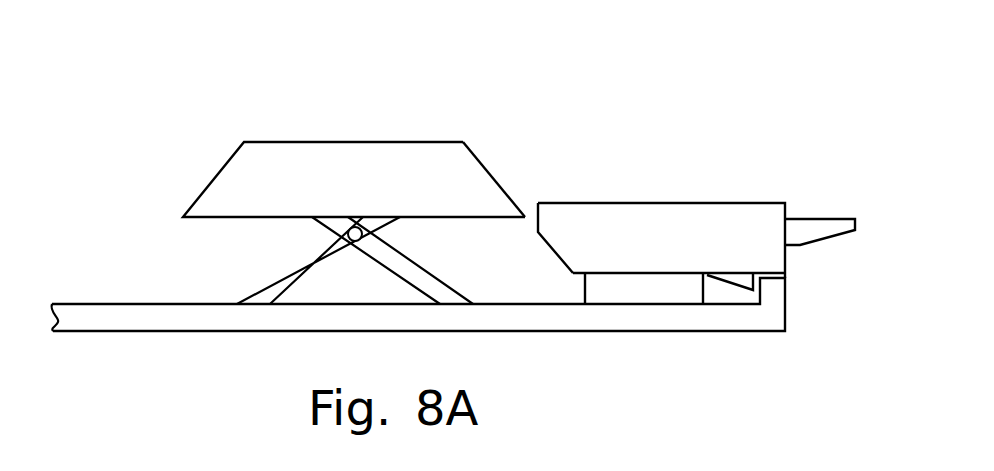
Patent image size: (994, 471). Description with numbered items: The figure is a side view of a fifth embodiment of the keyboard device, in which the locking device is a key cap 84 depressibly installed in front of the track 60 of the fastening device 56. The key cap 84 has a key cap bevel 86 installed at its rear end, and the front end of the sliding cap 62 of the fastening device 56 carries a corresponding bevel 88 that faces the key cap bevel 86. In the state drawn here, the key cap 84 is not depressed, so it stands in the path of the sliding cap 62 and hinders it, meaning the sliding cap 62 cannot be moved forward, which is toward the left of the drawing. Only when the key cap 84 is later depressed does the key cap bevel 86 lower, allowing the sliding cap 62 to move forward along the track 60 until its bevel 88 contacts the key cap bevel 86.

The fastening device 56 is at (772, 92).
The track 60 is at (657, 288).
The sliding cap 62 is at (715, 217).
The key cap 84 is at (352, 168).
The key cap bevel 86 is at (490, 168).
The bevel 88 is at (560, 253).